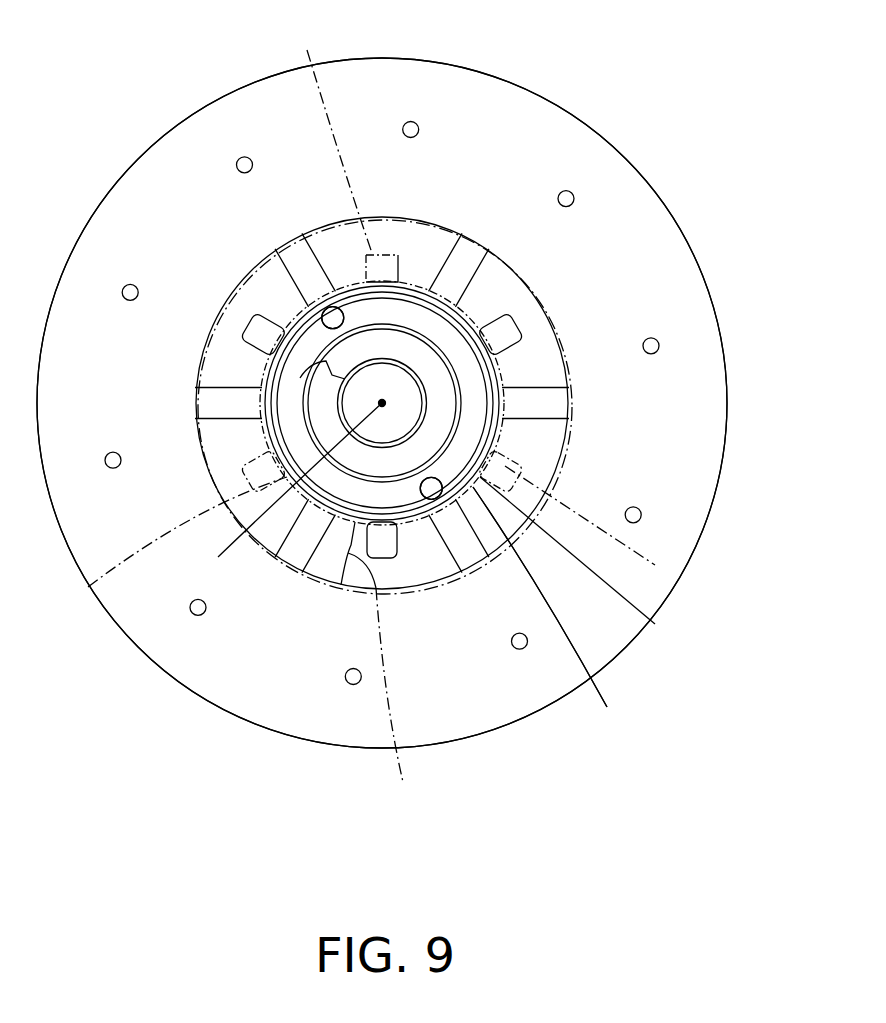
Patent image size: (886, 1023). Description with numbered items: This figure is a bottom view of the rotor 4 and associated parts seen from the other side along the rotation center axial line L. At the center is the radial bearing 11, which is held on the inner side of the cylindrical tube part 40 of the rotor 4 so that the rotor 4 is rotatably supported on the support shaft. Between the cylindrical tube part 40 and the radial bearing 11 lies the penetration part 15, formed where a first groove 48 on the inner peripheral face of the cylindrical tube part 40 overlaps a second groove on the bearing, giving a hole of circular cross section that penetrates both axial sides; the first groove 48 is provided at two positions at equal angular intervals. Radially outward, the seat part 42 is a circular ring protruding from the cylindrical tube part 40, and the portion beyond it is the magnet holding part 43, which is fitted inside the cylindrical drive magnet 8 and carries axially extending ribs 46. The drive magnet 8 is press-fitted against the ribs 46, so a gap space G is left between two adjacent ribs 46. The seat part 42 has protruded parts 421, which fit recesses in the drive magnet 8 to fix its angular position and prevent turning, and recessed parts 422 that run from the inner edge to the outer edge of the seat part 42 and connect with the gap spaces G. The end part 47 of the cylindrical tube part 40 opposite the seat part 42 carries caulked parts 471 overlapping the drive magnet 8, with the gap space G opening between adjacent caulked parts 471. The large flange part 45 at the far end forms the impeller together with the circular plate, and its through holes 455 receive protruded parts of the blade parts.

The rotor 4 is at (534, 83).
The drive magnet 8 is at (377, 664).
The radial bearing 11 is at (300, 378).
The penetration part 15 is at (382, 403).
The cylindrical tube part 40 is at (561, 616).
The seat part 42 is at (540, 352).
The magnet holding part 43 is at (540, 597).
The flange part 45 is at (633, 185).
The rib 46 is at (503, 403).
The end part 47 is at (500, 428).
The first groove 48 is at (335, 316).
The protruded part 421 is at (260, 325).
The recessed part 422 is at (302, 262).
The hole 455 is at (659, 343).
The caulked part 471 is at (699, 584).
The gap space G is at (655, 624).
The rotation center axial line L is at (291, 488).